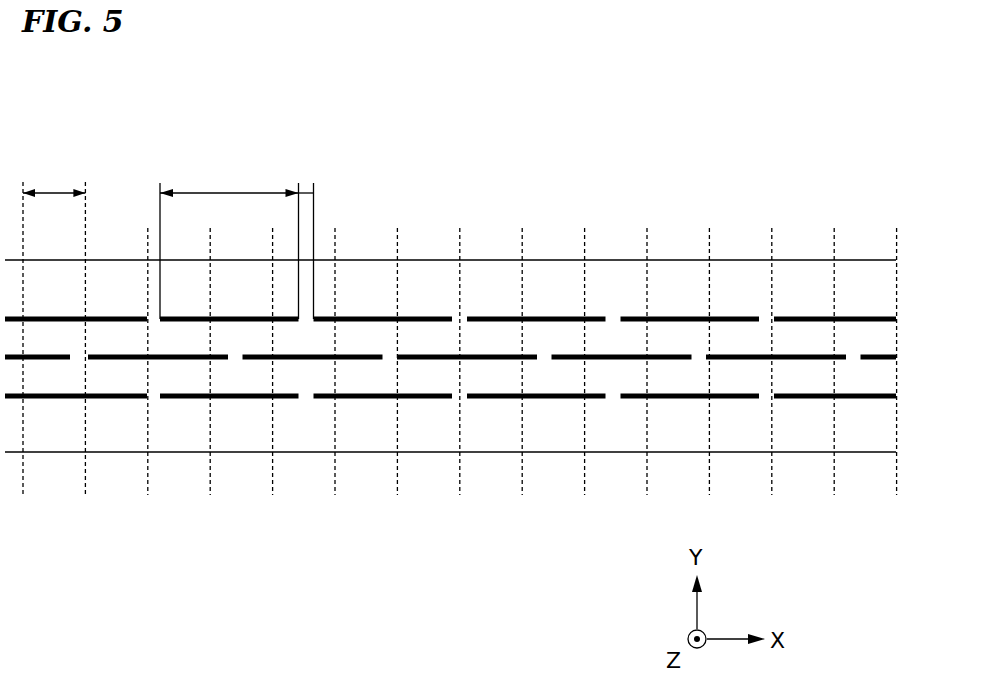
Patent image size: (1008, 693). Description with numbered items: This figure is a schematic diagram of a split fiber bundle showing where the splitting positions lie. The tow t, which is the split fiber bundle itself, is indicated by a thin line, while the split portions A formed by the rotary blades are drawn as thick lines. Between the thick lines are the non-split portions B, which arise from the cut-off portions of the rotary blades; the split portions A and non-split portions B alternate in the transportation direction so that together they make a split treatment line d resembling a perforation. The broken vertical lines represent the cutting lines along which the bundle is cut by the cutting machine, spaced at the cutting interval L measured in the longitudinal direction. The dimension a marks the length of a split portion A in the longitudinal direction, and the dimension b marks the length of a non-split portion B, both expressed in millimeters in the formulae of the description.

The split portion A is at (112, 318).
The non-split portion B is at (305, 333).
The tow t is at (676, 260).
The split treatment line d is at (900, 313).
The cutting interval L is at (54, 177).
The length of split portion a is at (229, 238).
The length of non-split portion b is at (307, 238).